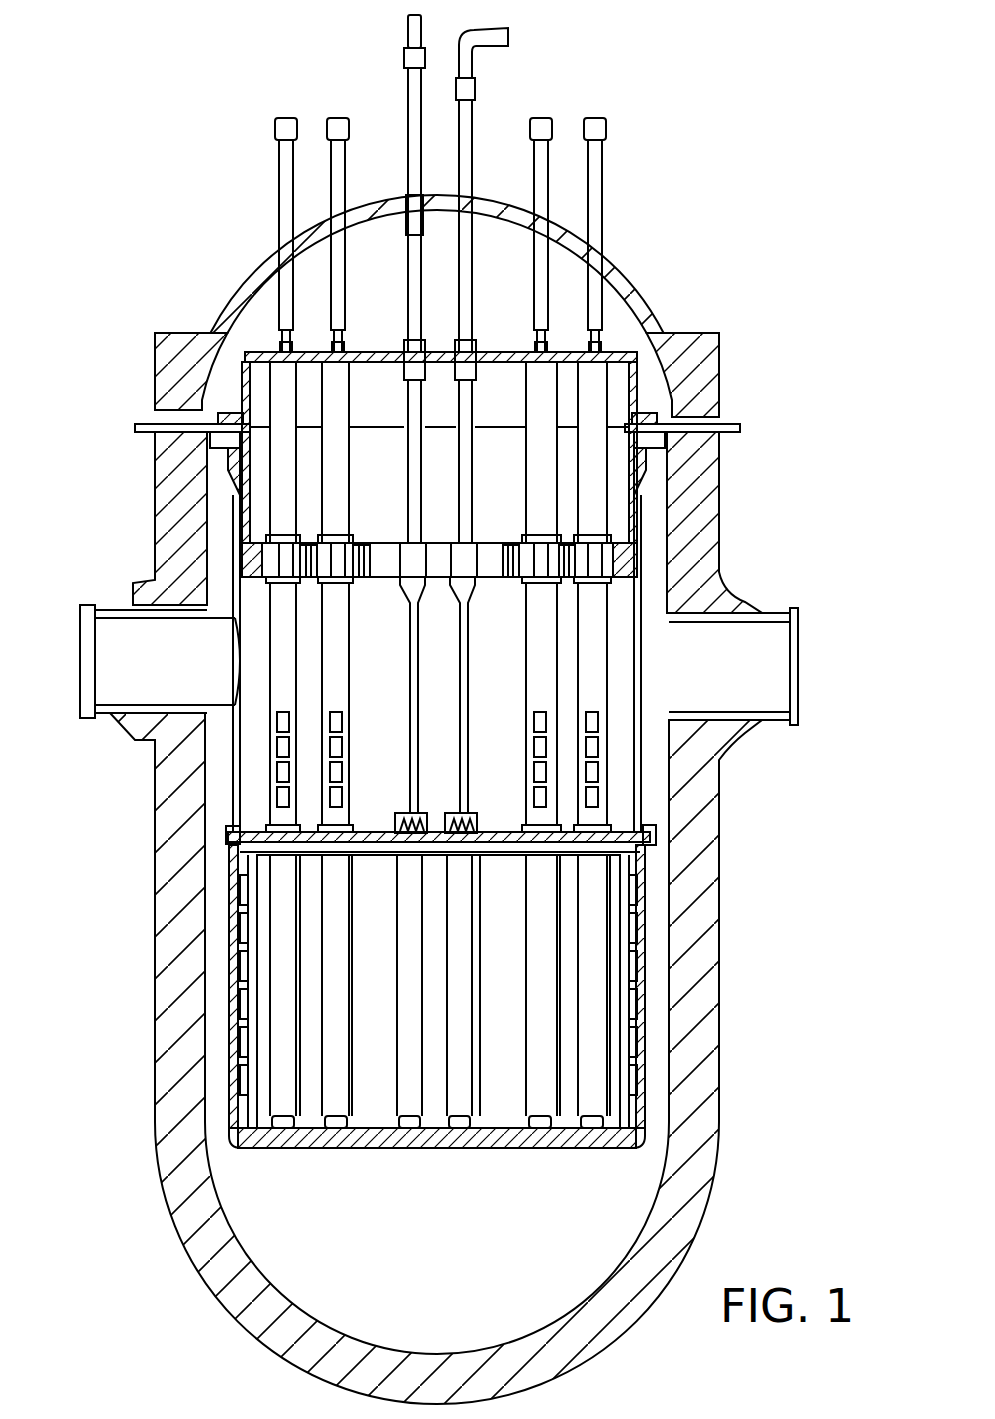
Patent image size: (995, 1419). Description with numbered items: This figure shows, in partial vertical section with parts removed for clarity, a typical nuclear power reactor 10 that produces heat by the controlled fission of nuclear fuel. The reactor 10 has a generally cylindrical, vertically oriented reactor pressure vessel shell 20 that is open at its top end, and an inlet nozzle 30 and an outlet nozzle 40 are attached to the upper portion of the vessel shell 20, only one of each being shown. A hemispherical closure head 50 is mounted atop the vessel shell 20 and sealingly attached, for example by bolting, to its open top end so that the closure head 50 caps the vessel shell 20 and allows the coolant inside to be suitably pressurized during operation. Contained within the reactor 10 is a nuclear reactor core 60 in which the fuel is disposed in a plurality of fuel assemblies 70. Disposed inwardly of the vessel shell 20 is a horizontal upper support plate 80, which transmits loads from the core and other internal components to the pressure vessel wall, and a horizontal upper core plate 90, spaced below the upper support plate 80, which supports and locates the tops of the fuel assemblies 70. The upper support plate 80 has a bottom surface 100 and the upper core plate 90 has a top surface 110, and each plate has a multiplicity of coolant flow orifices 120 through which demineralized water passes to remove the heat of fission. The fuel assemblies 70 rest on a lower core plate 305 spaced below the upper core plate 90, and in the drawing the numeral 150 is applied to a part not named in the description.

The nuclear power reactor 10 is at (748, 243).
The reactor pressure vessel shell 20 is at (631, 292).
The inlet nozzle 30 is at (745, 602).
The outlet nozzle 40 is at (86, 605).
The hemispherical closure head 50 is at (722, 388).
The nuclear reactor core 60 is at (518, 942).
The fuel assembly 70 is at (530, 1045).
The upper support plate 80 is at (622, 562).
The upper core plate 90 is at (657, 836).
The bottom surface 100 is at (614, 588).
The top surface 110 is at (505, 828).
The coolant flow orifice 120 is at (308, 583).
The instrumentation thimbles 150 is at (403, 722).
The lower core plate 305 is at (610, 1152).